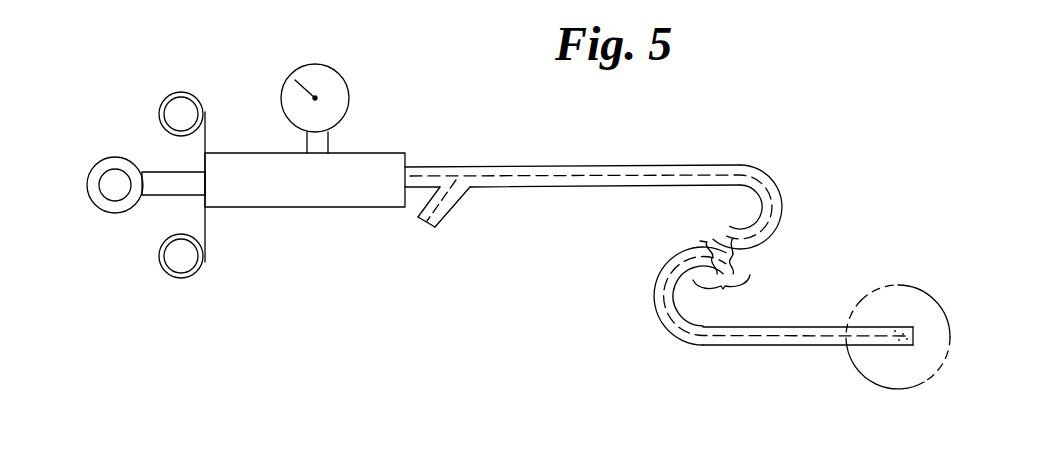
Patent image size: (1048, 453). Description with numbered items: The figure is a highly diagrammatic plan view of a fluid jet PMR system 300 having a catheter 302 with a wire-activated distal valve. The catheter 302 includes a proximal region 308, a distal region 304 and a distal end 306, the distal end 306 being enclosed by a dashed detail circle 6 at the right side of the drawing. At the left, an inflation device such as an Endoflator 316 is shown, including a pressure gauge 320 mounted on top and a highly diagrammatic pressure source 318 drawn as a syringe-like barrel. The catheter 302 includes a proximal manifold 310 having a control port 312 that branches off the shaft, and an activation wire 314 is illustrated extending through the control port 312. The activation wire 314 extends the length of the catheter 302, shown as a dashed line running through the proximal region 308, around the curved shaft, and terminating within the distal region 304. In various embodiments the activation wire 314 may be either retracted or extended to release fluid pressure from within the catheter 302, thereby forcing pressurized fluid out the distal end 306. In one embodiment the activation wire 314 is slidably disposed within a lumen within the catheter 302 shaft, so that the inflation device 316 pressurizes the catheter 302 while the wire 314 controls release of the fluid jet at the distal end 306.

The fluid jet PMR system 300 is at (787, 153).
The catheter 302 is at (777, 186).
The distal region 304 is at (832, 345).
The distal end 306 is at (947, 305).
The proximal region 308 is at (527, 188).
The proximal manifold 310 is at (477, 167).
The control port 312 is at (428, 228).
The activation wire 314 is at (417, 222).
The inflation device 316 is at (380, 124).
The pressure source 318 is at (282, 208).
The pressure gauge 320 is at (339, 74).
The detail circle for FIG. 6 is at (910, 283).